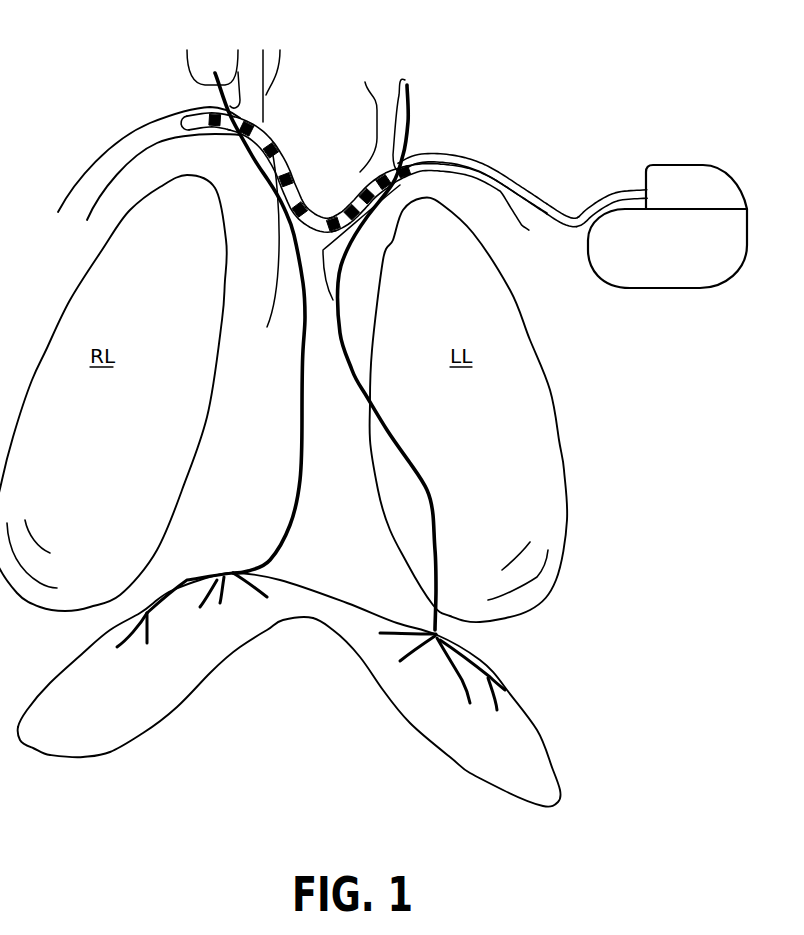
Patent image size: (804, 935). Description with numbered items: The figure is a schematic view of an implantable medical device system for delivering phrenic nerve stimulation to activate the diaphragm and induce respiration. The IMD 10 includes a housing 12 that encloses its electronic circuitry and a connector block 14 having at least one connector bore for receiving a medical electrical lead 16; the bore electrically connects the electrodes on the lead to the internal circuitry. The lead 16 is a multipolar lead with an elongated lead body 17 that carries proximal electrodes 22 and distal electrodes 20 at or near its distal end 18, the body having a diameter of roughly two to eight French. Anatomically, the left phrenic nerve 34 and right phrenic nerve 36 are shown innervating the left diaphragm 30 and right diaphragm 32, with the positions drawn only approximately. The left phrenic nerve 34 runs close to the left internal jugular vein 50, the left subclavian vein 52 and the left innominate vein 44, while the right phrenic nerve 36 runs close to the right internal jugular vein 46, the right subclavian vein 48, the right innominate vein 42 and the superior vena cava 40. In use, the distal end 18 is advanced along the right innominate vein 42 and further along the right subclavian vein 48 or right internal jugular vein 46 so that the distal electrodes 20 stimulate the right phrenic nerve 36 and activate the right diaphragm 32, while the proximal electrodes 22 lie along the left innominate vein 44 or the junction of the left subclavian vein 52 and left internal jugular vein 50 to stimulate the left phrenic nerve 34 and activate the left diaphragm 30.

The implantable medical device 10 is at (676, 203).
The housing 12 is at (667, 290).
The connector block 14 is at (744, 194).
The medical electrical lead 16 is at (580, 190).
The lead body 17 is at (568, 232).
The distal end 18 is at (183, 123).
The distal electrodes 20 is at (267, 125).
The proximal electrodes 22 is at (362, 186).
The left diaphragm 30 is at (530, 775).
The right diaphragm 32 is at (60, 727).
The left phrenic nerve 34 is at (413, 132).
The right phrenic nerve 36 is at (213, 81).
The superior vena cava 40 is at (270, 288).
The right innominate vein 42 is at (262, 163).
The left innominate vein 44 is at (338, 198).
The right internal jugular vein 46 is at (262, 78).
The right subclavian vein 48 is at (98, 163).
The left internal jugular vein 50 is at (365, 85).
The left subclavian vein 52 is at (518, 178).